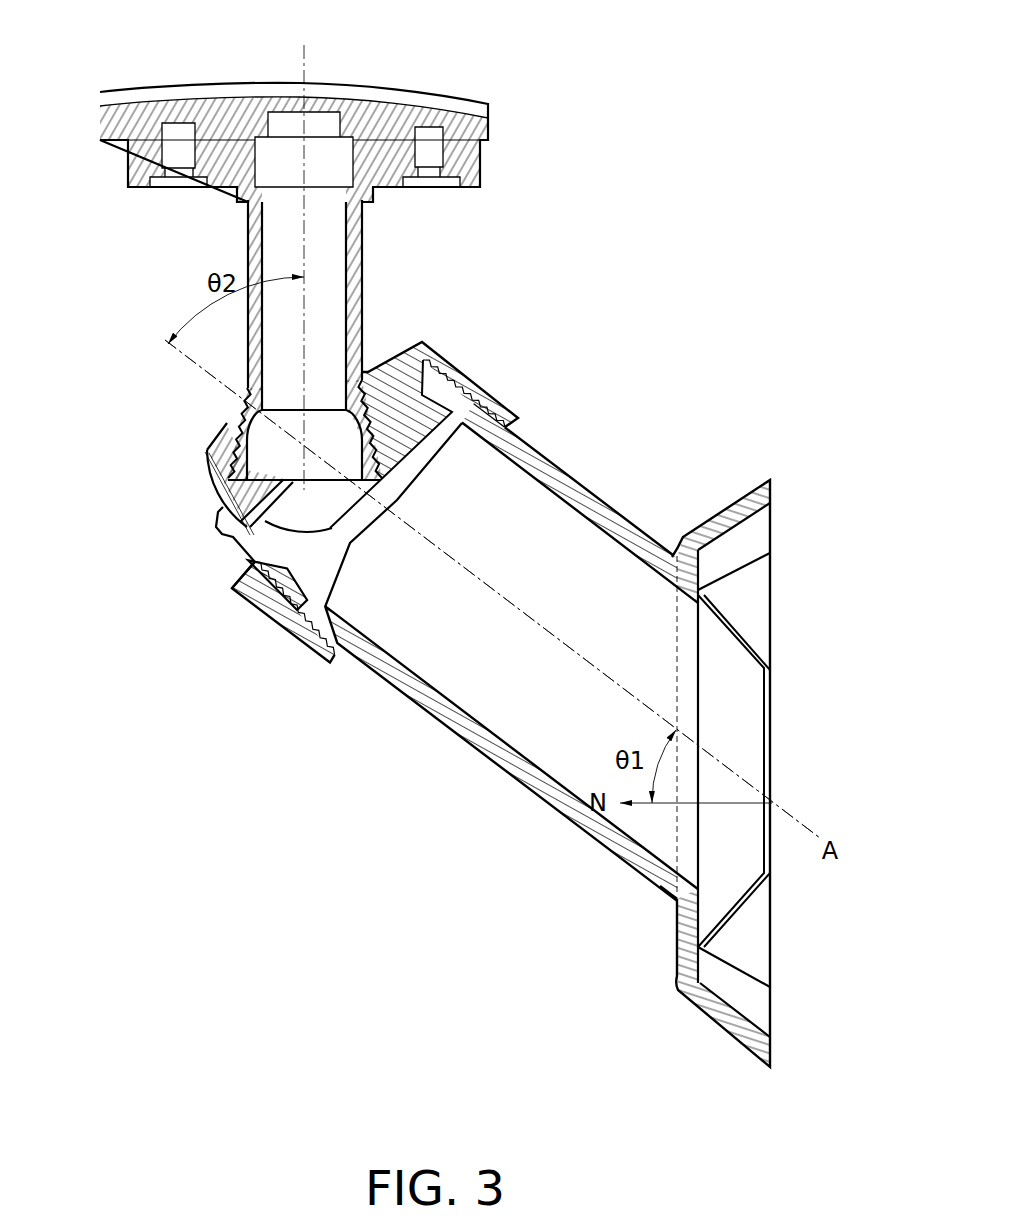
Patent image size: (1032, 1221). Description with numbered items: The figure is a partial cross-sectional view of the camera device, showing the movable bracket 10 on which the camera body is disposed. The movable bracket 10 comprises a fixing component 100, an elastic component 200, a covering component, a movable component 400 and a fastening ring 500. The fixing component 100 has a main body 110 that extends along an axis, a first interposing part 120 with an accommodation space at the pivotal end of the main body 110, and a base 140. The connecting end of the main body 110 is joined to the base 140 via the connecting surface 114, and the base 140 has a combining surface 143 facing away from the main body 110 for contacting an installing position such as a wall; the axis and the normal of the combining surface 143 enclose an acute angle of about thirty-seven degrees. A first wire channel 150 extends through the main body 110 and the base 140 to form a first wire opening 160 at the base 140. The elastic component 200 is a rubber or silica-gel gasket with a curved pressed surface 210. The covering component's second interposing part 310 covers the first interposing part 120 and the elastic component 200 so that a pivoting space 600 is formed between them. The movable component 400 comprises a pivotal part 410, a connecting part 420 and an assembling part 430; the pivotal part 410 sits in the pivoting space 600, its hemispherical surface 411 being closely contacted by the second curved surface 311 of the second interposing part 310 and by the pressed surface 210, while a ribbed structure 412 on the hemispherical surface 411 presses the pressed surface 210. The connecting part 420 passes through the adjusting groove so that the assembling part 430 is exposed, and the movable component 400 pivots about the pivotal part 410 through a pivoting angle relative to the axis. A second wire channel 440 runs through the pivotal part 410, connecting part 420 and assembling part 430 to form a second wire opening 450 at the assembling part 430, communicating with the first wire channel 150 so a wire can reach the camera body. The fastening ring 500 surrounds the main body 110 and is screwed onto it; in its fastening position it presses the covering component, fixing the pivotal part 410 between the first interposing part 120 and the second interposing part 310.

The movable bracket 10 is at (527, 862).
The fixing component 100 is at (551, 676).
The main body 110 is at (460, 728).
The connecting surface 114 is at (668, 893).
The first interposing part 120 is at (352, 598).
The base 140 is at (720, 773).
The combining surface 143 is at (776, 528).
The first wire channel 150 is at (548, 548).
The first wire opening 160 is at (770, 730).
The elastic component 200 is at (391, 362).
The pressed surface 210 is at (262, 548).
The second interposing part 310 is at (228, 477).
The second curved surface 311 is at (270, 476).
The movable component 400 is at (302, 338).
The pivotal part 410 is at (255, 402).
The hemispherical surface 411 is at (217, 419).
The ribbed structure 412 is at (238, 410).
The connecting part 420 is at (257, 213).
The assembling part 430 is at (150, 172).
The second wire channel 440 is at (316, 282).
The second wire opening 450 is at (323, 118).
The fastening ring 500 is at (270, 650).
The pivoting space 600 is at (254, 498).